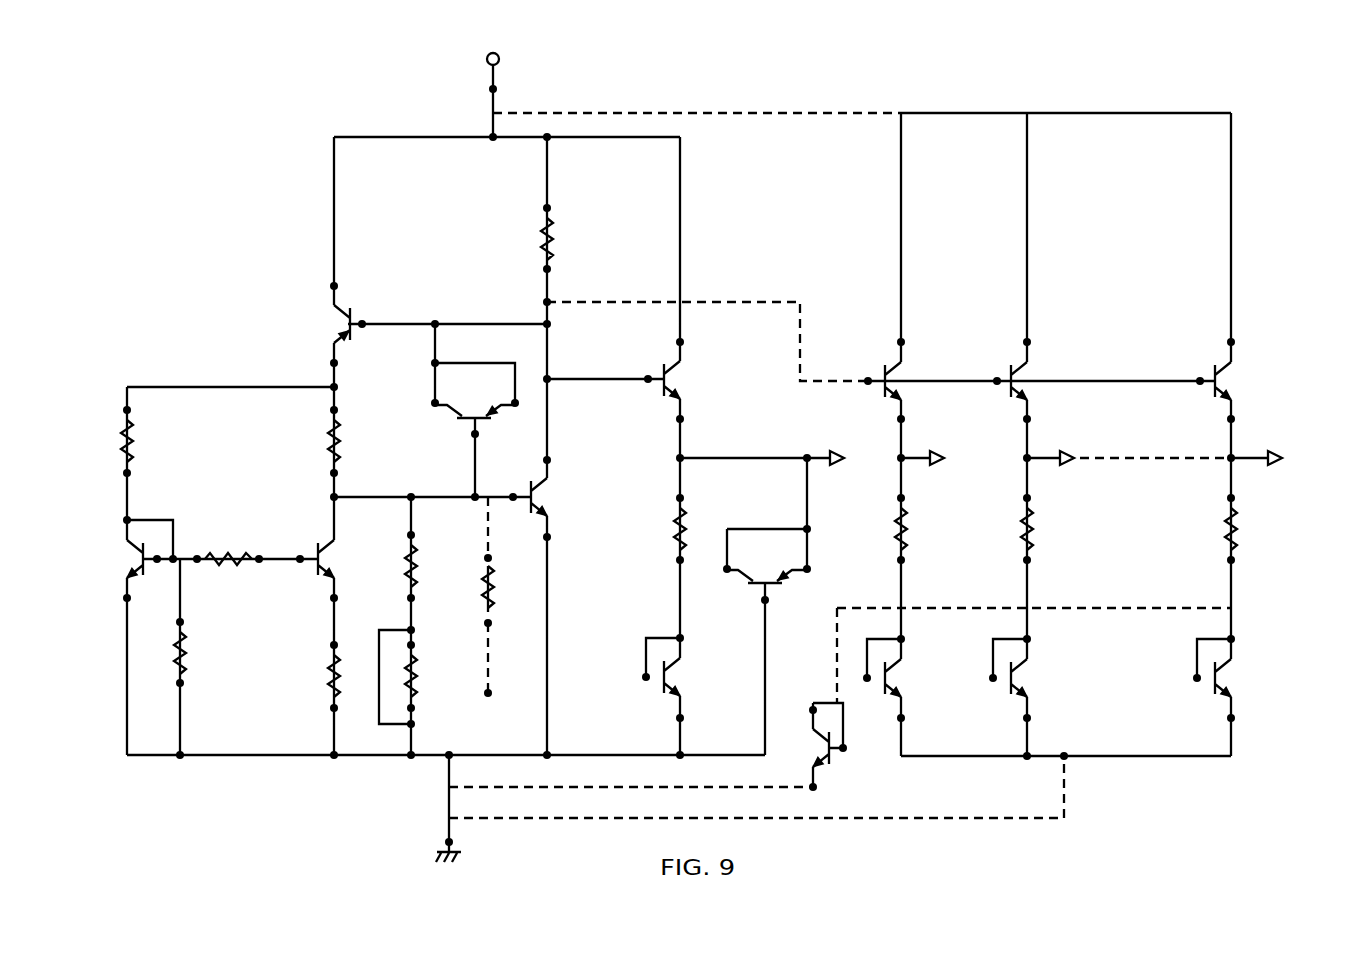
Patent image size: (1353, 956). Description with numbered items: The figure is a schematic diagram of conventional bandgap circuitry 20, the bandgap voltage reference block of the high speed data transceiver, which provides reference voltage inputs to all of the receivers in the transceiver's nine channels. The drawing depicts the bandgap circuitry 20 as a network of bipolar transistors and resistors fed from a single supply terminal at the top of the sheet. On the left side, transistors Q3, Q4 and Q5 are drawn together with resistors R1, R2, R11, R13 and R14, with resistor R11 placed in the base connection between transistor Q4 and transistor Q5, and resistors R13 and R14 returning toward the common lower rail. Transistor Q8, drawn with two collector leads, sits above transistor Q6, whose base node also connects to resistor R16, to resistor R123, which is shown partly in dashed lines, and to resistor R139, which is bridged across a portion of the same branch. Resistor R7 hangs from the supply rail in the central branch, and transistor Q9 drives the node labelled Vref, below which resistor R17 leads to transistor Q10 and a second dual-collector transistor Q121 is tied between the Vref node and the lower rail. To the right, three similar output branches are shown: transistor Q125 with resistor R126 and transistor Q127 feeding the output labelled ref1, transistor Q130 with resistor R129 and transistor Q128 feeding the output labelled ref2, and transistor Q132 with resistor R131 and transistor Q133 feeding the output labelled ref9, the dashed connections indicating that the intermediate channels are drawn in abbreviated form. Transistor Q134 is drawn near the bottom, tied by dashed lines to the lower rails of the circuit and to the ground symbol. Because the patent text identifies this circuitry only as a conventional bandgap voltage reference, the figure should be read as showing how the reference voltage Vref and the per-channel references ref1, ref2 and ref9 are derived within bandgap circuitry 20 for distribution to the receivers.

The bandgap voltage reference block 20 is at (1276, 119).
The transistor Q3 is at (329, 324).
The transistor Q4 is at (125, 559).
The transistor Q5 is at (334, 559).
The transistor Q6 is at (547, 497).
The transistor Q8 is at (474, 403).
The transistor Q9 is at (685, 376).
The transistor Q10 is at (686, 677).
The transistor Q121 is at (765, 566).
The transistor Q125 is at (914, 377).
The transistor Q127 is at (906, 678).
The transistor Q128 is at (1033, 678).
The transistor Q130 is at (1040, 377).
The transistor Q132 is at (1244, 381).
The transistor Q133 is at (1238, 678).
The transistor Q134 is at (807, 748).
The resistor R1 is at (139, 441).
The resistor R2 is at (346, 441).
The resistor R7 is at (561, 238).
The resistor R11 is at (228, 546).
The resistor R13 is at (198, 652).
The resistor R14 is at (350, 676).
The resistor R16 is at (428, 566).
The resistor R17 is at (697, 529).
The resistor R123 is at (509, 625).
The resistor R126 is at (921, 529).
The resistor R129 is at (1047, 529).
The resistor R131 is at (1250, 529).
The resistor R139 is at (431, 676).
The reference voltage output Vref is at (857, 460).
The reference output ref1 is at (958, 460).
The reference output ref2 is at (1087, 449).
The reference output ref9 is at (1292, 454).